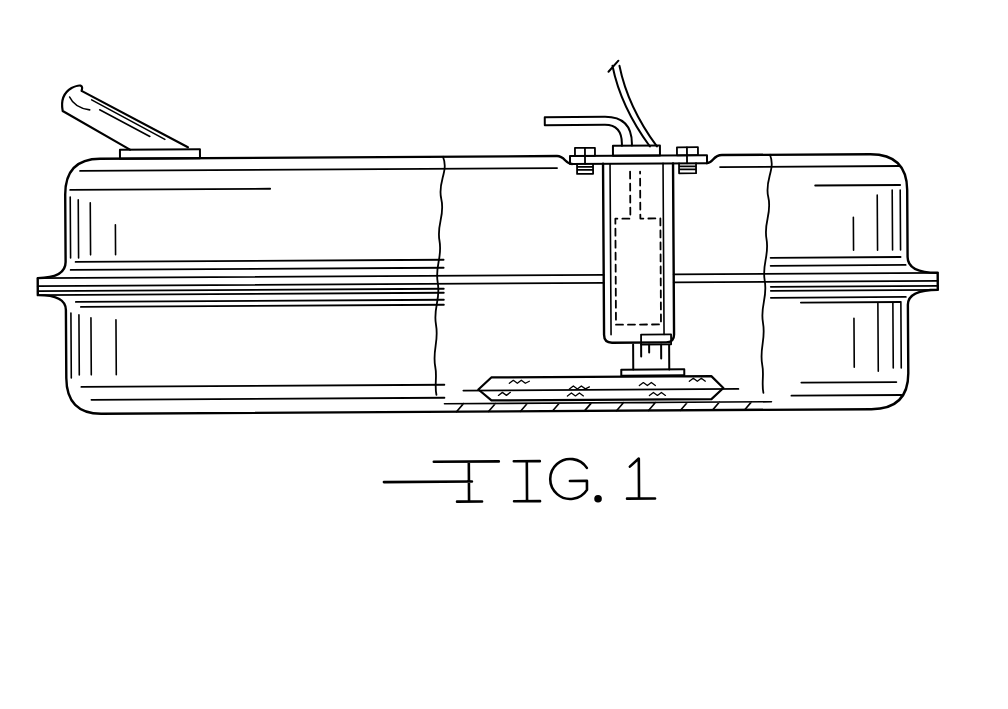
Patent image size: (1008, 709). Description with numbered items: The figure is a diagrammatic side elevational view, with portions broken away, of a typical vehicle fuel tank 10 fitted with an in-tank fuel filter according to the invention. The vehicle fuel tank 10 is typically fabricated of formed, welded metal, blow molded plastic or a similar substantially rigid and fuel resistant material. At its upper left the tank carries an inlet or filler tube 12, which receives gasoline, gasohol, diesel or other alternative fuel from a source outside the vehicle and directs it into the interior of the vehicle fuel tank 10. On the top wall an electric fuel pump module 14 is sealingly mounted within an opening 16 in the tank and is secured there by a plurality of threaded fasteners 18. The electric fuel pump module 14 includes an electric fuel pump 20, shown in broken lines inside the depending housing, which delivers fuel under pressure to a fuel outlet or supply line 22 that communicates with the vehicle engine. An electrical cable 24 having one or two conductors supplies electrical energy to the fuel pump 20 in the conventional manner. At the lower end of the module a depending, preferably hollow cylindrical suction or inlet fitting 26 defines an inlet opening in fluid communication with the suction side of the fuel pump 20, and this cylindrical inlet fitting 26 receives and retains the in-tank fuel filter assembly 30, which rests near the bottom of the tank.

The vehicle fuel tank 10 is at (349, 98).
The filler tube 12 is at (118, 121).
The electric fuel pump module 14 is at (665, 136).
The opening 16 is at (595, 178).
The threaded fasteners 18 is at (700, 157).
The electric fuel pump 20 is at (630, 289).
The fuel supply line 22 is at (566, 118).
The electrical cable 24 is at (641, 103).
The inlet fitting 26 is at (666, 356).
The in-tank fuel filter assembly 30 is at (573, 380).